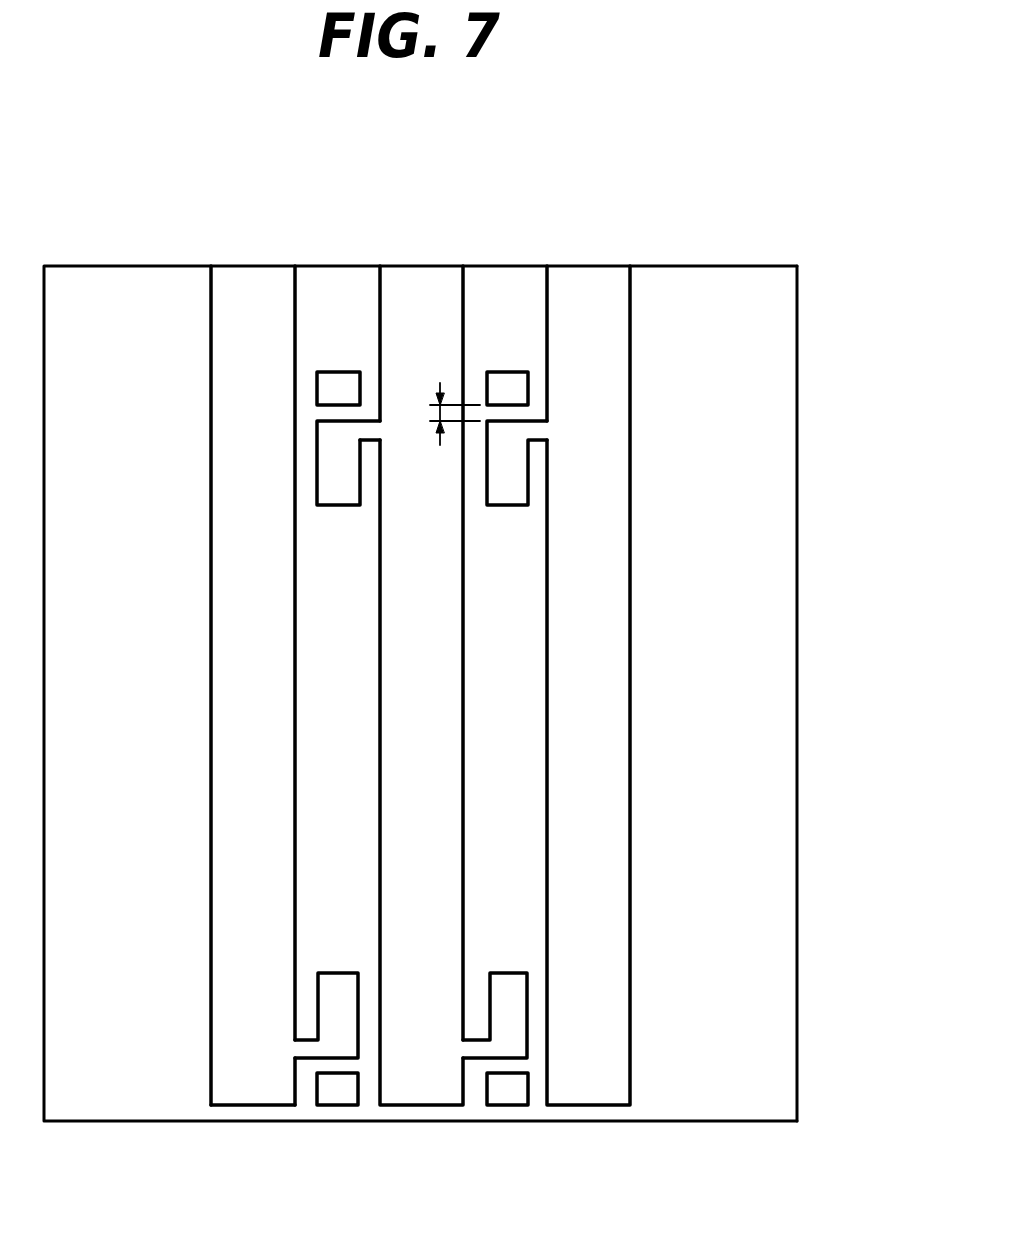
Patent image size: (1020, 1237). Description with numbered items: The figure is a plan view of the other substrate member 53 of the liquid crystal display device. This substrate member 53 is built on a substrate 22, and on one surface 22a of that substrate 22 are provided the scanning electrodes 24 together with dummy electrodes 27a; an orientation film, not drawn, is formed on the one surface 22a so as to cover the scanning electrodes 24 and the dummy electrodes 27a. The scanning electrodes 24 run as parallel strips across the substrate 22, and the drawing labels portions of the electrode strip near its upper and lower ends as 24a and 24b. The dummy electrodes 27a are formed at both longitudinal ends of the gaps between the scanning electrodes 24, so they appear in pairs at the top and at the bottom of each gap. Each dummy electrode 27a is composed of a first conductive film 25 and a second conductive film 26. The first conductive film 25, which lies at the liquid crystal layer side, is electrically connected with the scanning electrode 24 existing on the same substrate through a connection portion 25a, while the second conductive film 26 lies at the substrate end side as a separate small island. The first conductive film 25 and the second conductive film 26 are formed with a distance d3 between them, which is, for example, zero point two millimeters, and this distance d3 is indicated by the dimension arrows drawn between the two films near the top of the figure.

The substrate member 53 is at (755, 178).
The substrate 22 is at (797, 571).
The one surface 22a is at (734, 926).
The scanning electrodes 24 is at (588, 282).
The electrode end portion 24a is at (238, 297).
The electrode end portion 24b is at (250, 1087).
The first conductive film 25 is at (327, 472).
The connection portion 25a is at (370, 430).
The second conductive film 26 is at (328, 393).
The dummy electrodes 27a is at (141, 373).
The distance d3 is at (437, 407).